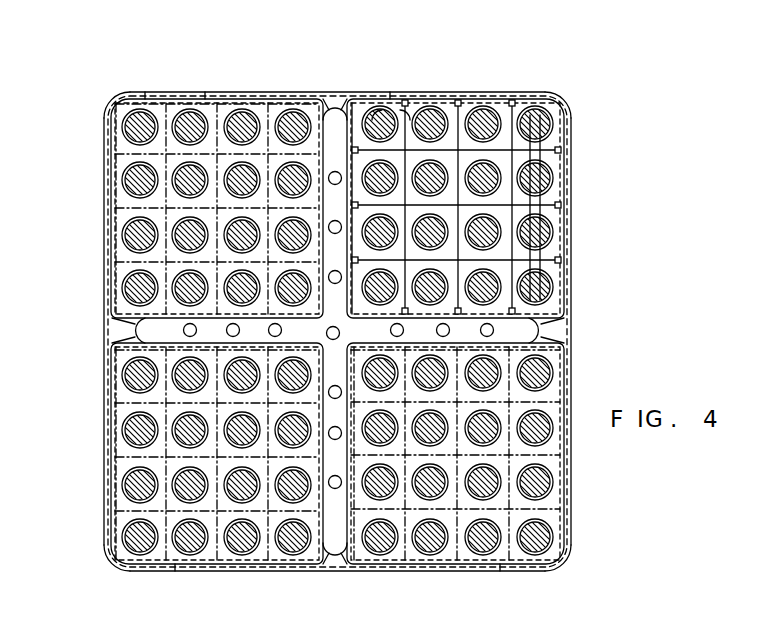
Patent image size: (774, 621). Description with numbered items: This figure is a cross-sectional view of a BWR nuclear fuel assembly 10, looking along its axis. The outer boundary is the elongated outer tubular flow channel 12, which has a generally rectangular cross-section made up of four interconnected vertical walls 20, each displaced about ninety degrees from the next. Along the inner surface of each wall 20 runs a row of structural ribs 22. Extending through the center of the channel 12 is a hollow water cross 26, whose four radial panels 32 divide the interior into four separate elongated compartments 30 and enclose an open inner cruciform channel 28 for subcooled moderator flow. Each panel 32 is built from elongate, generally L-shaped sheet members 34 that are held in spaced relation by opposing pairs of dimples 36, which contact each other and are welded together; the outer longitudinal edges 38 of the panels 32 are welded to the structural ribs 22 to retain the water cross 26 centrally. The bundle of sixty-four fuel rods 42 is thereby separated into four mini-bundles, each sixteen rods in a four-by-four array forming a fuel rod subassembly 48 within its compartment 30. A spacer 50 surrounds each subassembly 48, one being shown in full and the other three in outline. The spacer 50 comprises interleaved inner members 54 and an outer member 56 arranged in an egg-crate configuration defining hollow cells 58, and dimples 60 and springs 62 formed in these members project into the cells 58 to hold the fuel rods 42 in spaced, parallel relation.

The nuclear fuel assembly 10 is at (600, 78).
The outer tubular flow channel 12 is at (574, 525).
The vertical walls 20 is at (413, 97).
The structural ribs 22 is at (340, 95).
The hollow water cross 26 is at (140, 385).
The open inner channel 28 is at (120, 420).
The compartments 30 is at (210, 98).
The radial panels 32 is at (273, 97).
The sheet members 34 is at (363, 108).
The dimples 36 is at (328, 222).
The outer longitudinal edges 38 is at (318, 97).
The fuel rods 42 is at (130, 178).
The fuel rod subassembly 48 is at (158, 97).
The spacer 50 is at (112, 198).
The inner members 54 is at (458, 103).
The outer member 56 is at (540, 165).
The hollow cells 58 is at (477, 100).
The dimples 60 is at (495, 100).
The springs 62 is at (522, 100).